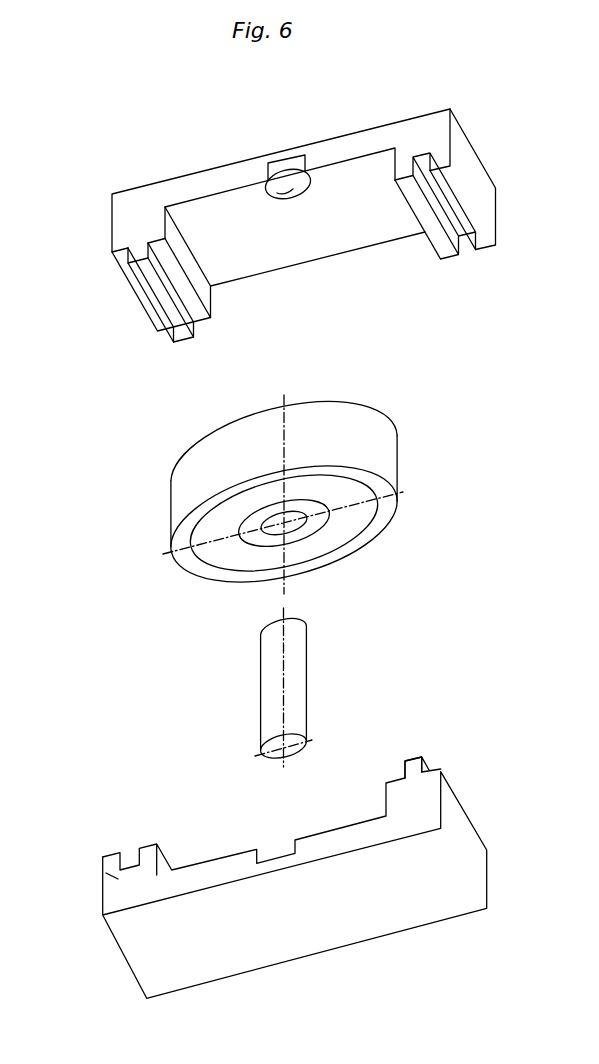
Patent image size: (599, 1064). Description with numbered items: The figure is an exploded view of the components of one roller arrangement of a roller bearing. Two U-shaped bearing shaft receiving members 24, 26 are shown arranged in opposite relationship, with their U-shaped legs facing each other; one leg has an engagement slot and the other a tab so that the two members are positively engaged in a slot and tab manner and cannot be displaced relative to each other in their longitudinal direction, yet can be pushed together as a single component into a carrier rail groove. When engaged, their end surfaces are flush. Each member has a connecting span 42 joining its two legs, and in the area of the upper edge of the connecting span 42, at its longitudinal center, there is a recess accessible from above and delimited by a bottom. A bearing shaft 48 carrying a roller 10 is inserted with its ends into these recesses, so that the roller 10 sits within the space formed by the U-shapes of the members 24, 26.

The roller 10 is at (367, 422).
The bearing shaft receiving member 24 is at (366, 129).
The bearing shaft receiving member 26 is at (102, 878).
The connecting span 42 is at (278, 253).
The bearing shaft 48 is at (293, 687).